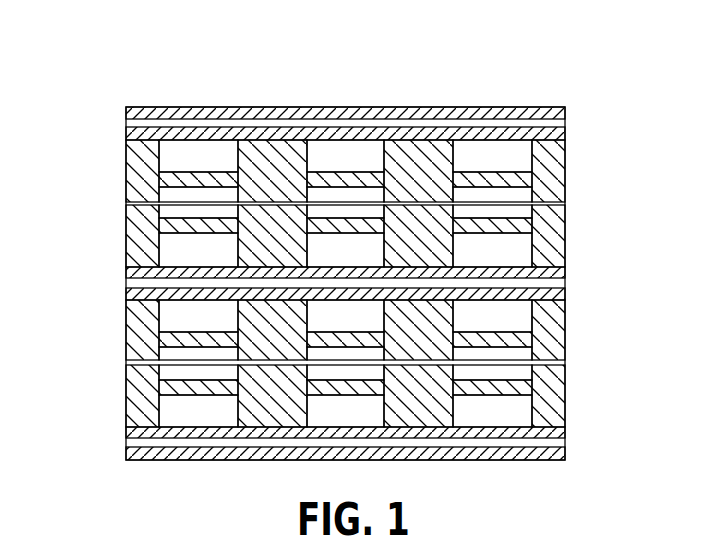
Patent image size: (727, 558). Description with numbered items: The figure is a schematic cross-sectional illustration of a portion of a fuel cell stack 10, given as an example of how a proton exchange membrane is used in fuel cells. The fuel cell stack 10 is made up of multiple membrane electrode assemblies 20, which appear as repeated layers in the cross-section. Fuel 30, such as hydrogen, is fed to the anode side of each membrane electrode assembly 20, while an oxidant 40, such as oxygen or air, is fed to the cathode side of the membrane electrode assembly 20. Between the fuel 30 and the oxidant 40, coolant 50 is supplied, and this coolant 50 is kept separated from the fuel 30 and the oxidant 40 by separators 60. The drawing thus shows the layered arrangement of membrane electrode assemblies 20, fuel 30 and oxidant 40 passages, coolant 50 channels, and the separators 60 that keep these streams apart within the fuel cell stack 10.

The fuel cell stack 10 is at (176, 90).
The membrane electrode assembly 20 is at (575, 108).
The fuel 30 is at (168, 160).
The oxidant 40 is at (178, 245).
The coolant 50 is at (177, 219).
The separator 60 is at (547, 171).